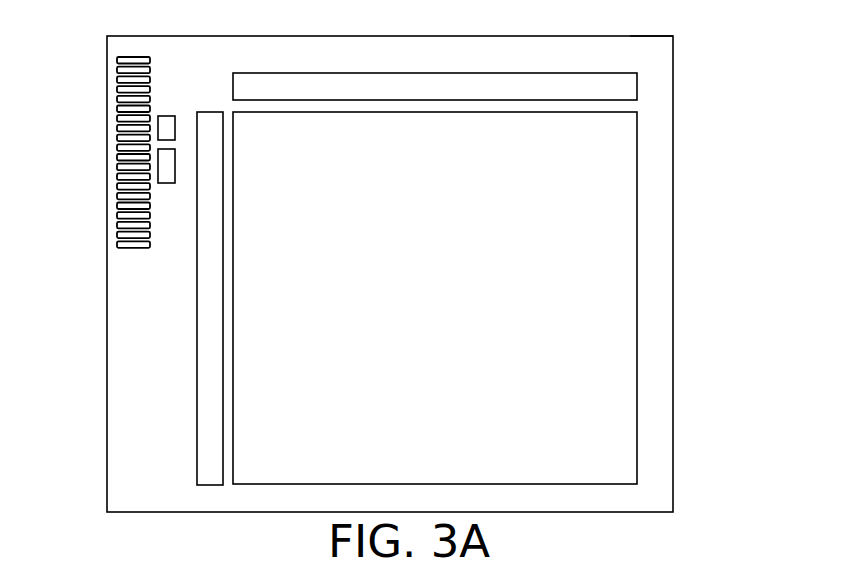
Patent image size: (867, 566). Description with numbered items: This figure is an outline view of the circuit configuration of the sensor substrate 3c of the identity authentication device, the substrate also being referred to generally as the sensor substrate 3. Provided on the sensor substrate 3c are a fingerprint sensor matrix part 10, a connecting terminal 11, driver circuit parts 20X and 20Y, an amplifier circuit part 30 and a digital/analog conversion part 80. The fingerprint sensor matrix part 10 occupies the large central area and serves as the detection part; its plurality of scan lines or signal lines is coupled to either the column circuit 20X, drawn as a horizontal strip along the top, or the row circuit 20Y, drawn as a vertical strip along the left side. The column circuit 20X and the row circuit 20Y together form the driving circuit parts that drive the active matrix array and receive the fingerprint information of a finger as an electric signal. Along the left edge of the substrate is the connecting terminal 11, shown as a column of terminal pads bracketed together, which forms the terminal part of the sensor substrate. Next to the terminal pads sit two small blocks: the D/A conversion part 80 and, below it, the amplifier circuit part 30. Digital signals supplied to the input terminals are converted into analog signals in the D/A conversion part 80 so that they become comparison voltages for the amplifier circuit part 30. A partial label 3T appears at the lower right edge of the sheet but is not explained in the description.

The sensor substrate 3 is at (778, 67).
The sensor substrate 3c is at (645, 36).
The fingerprint sensor matrix part 10 is at (456, 304).
The connecting terminal 11 is at (90, 60).
The column circuit 20X is at (625, 87).
The row circuit 20Y is at (210, 353).
The amplifier circuit part 30 is at (168, 173).
The D/A conversion part 80 is at (166, 122).
The panel label fragment 3T is at (738, 559).